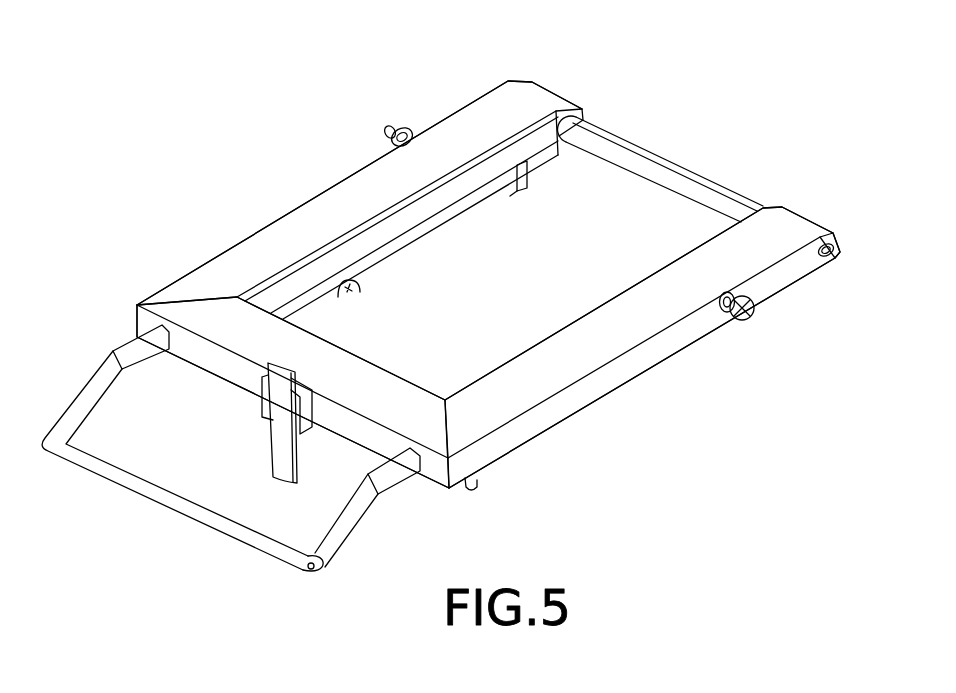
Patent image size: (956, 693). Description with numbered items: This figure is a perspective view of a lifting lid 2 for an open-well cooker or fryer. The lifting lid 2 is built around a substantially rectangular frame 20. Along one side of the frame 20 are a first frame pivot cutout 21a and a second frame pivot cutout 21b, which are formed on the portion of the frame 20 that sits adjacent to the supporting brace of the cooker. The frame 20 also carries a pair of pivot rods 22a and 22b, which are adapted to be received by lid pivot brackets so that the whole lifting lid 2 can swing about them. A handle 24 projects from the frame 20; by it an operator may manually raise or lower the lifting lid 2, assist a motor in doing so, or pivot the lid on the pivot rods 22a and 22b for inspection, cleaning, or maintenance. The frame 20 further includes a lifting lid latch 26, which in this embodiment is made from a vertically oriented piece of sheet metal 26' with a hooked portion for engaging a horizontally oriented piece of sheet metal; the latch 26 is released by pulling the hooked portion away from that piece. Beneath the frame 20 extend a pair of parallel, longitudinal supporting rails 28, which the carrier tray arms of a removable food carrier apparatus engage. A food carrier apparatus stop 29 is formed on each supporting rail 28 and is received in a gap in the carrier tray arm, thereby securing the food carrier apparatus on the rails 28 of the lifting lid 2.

The lifting lid 2 is at (259, 174).
The frame 20 is at (570, 420).
The first frame pivot cutout 21a is at (805, 223).
The second frame pivot cutout 21b is at (552, 93).
The pivot rod 22a is at (748, 321).
The pivot rod 22b is at (391, 127).
The handle 24 is at (358, 528).
The lifting lid latch 26 is at (238, 409).
The vertically oriented piece of sheet metal 26' is at (242, 425).
The supporting rail 28 is at (513, 198).
The food carrier apparatus stop 29 is at (354, 292).